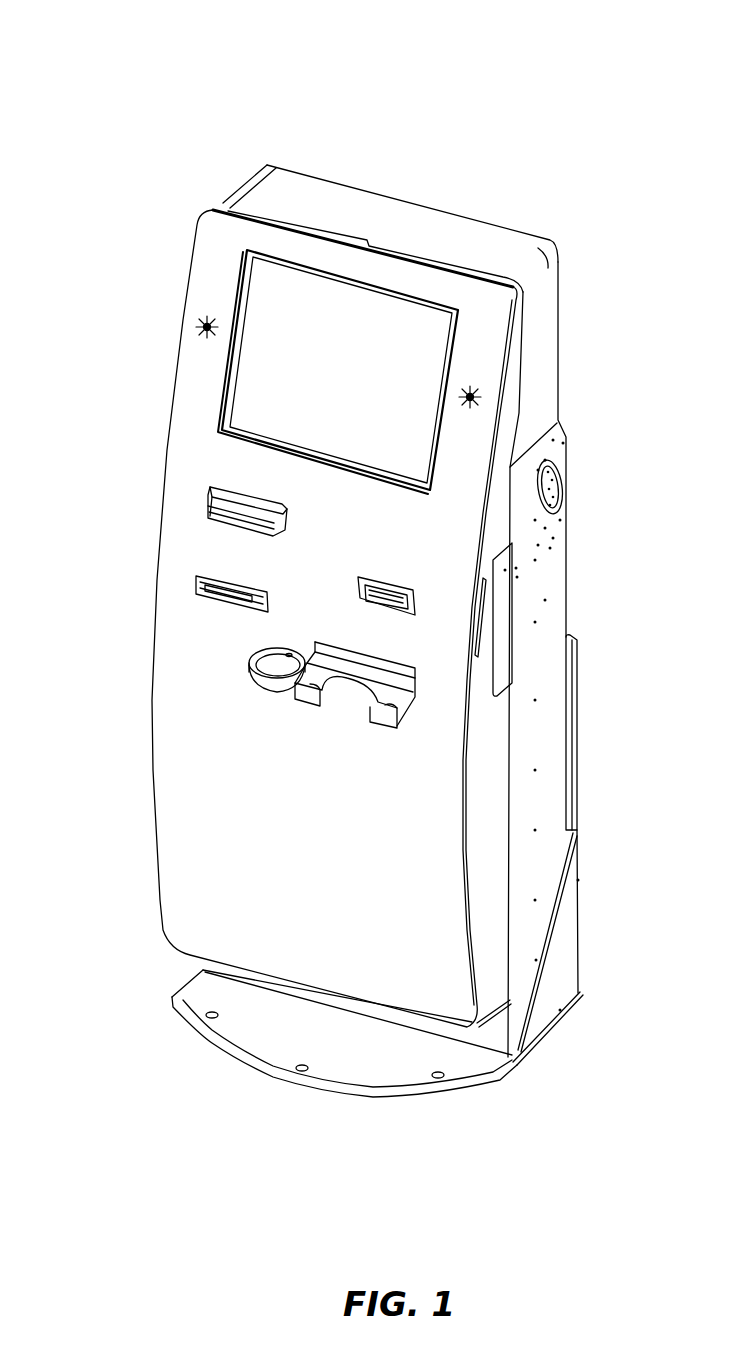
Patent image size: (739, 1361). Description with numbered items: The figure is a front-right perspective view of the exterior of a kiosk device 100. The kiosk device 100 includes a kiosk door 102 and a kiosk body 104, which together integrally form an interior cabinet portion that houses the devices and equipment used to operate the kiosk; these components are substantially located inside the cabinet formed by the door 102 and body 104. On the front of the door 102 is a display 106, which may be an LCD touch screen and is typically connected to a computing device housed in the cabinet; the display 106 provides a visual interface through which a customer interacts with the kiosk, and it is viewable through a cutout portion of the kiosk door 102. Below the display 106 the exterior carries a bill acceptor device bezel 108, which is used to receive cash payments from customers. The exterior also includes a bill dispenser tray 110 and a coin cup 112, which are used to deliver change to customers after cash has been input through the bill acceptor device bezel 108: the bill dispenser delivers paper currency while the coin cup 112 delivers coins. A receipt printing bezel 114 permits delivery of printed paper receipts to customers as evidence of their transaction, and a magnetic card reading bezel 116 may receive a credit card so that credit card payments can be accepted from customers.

The kiosk device 100 is at (573, 57).
The kiosk door 102 is at (152, 812).
The kiosk body 104 is at (562, 607).
The display 106 is at (237, 290).
The bill acceptor device bezel 108 is at (365, 578).
The bill dispenser tray 110 is at (353, 662).
The coin cup 112 is at (268, 692).
The receipt printing bezel 114 is at (258, 590).
The magnetic card reading bezel 116 is at (207, 505).